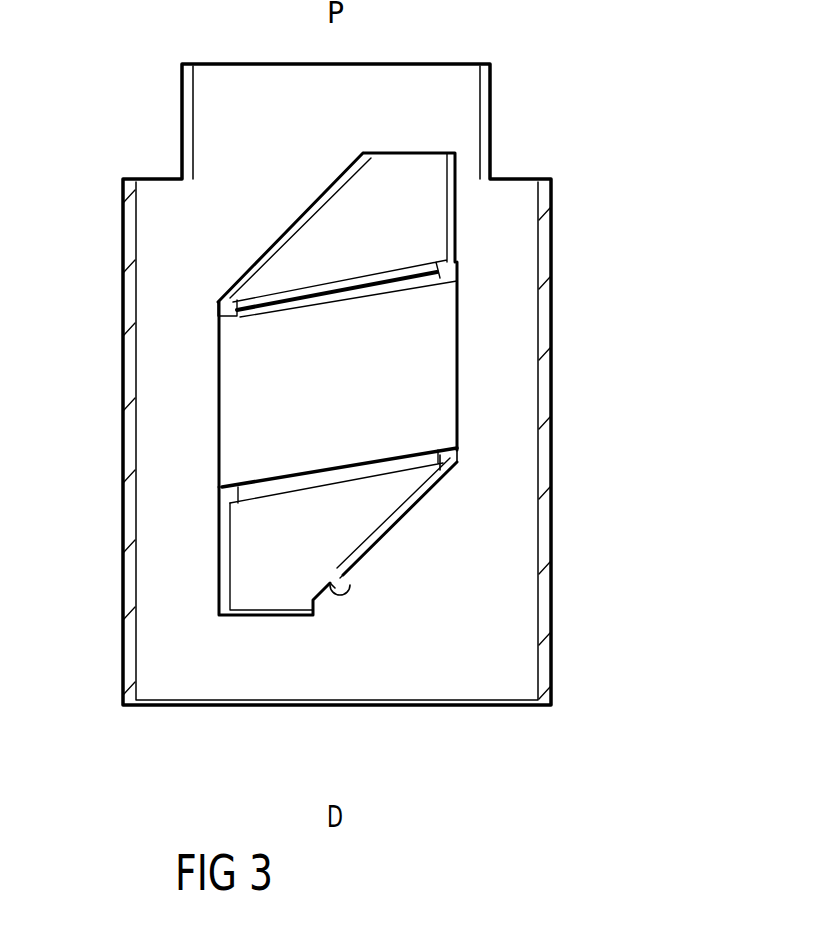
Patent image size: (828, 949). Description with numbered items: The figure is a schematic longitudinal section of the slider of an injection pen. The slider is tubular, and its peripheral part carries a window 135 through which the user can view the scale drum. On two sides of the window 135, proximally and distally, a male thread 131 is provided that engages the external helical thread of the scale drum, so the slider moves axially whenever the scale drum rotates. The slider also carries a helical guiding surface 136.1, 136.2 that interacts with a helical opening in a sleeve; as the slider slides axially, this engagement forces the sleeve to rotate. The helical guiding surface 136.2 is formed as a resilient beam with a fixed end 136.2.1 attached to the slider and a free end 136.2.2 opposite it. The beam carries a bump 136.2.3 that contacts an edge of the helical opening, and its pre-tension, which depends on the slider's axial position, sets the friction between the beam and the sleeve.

The male thread 131 is at (457, 460).
The window 135 is at (251, 407).
The helical guiding surface 136.1 is at (297, 210).
The helical guiding surface 136.2 is at (397, 530).
The fixed end 136.2.1 is at (440, 488).
The free end 136.2.2 is at (323, 598).
The bump 136.2.3 is at (348, 593).